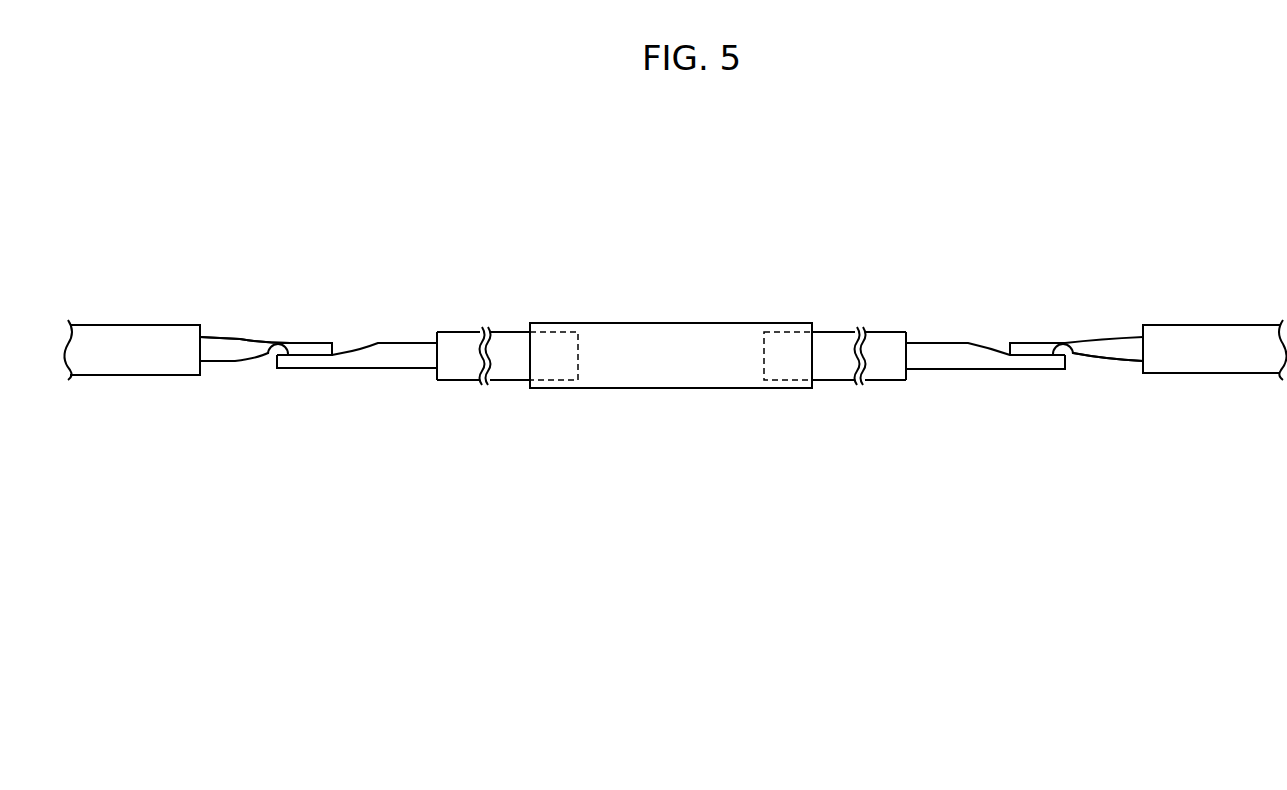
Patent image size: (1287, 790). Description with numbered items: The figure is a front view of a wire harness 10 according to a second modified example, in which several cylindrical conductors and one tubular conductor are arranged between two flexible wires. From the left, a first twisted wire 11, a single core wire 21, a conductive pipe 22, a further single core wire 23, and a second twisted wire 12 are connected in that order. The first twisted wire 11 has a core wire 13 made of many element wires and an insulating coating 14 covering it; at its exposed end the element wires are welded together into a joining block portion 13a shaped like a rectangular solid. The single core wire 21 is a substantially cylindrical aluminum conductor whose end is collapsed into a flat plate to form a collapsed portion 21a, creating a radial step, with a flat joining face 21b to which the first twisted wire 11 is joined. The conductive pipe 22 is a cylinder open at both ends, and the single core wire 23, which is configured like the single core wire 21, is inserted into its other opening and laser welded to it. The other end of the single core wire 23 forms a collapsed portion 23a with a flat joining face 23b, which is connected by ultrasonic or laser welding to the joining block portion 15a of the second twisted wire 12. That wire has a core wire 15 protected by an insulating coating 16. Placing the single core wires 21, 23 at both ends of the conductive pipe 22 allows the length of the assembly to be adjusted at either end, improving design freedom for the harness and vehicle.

The wire harness 10 is at (244, 108).
The first twisted wire 11 is at (155, 323).
The second twisted wire 12 is at (1233, 324).
The core wire 13 is at (232, 335).
The joining block portion 13a is at (302, 352).
The insulating coating 14 is at (157, 358).
The core wire 15 is at (1128, 335).
The joining block portion 15a is at (1044, 348).
The insulating coating 16 is at (1233, 360).
The single core wire 21 is at (512, 370).
The collapsed portion 21a is at (397, 362).
The joining face 21b is at (275, 358).
The conductive pipe 22 is at (675, 337).
The single core wire 23 is at (838, 370).
The collapsed portion 23a is at (995, 360).
The joining face 23b is at (1070, 357).